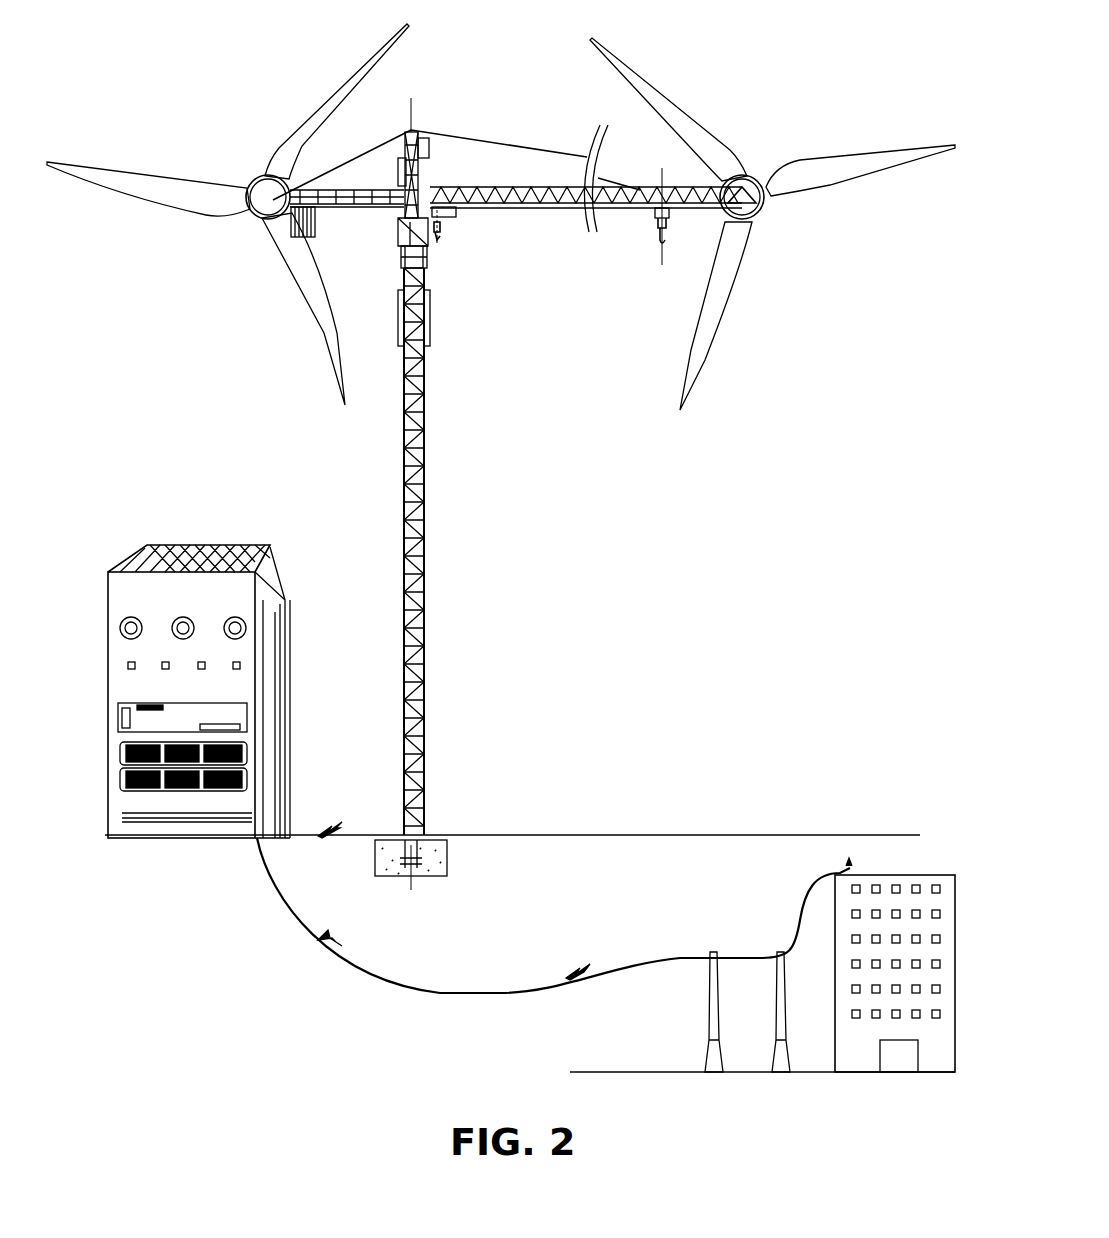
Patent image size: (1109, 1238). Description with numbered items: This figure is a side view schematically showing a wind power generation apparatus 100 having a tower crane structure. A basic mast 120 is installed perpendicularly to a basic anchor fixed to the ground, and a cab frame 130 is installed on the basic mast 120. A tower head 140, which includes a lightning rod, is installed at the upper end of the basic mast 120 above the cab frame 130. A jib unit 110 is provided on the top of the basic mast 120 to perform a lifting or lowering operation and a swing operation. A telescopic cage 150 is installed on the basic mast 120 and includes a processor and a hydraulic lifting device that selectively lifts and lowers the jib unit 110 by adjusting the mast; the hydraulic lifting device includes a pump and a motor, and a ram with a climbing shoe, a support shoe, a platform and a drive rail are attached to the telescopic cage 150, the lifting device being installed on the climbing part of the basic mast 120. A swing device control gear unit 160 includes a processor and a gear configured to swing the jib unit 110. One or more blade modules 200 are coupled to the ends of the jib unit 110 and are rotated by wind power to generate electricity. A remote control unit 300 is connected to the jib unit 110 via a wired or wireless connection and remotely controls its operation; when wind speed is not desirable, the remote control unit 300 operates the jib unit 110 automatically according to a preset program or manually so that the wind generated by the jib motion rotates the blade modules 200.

The tower crane 100 is at (501, 128).
The jib unit 110 is at (362, 212).
The basic mast 120 is at (426, 748).
The cab frame 130 is at (437, 236).
The tower head 140 is at (420, 160).
The telescopic cage 150 is at (428, 318).
The swing device control gear unit 160 is at (427, 262).
The blade module 200 is at (185, 158).
The remote control unit 300 is at (284, 588).